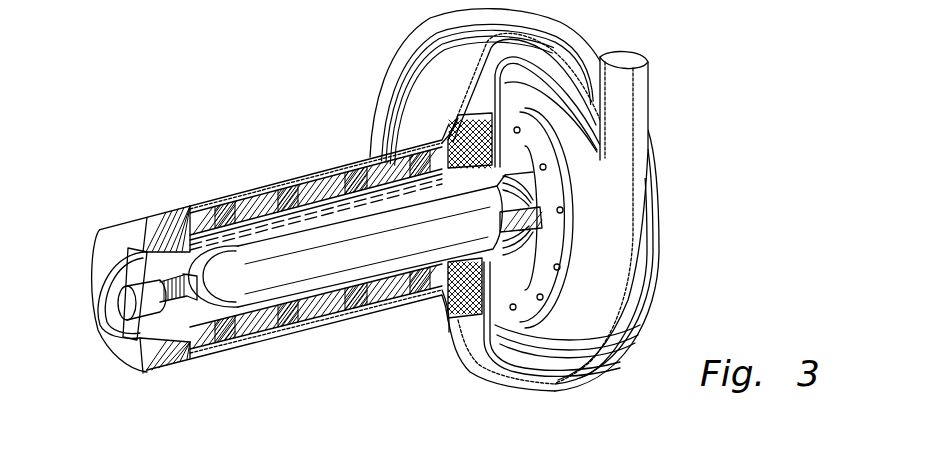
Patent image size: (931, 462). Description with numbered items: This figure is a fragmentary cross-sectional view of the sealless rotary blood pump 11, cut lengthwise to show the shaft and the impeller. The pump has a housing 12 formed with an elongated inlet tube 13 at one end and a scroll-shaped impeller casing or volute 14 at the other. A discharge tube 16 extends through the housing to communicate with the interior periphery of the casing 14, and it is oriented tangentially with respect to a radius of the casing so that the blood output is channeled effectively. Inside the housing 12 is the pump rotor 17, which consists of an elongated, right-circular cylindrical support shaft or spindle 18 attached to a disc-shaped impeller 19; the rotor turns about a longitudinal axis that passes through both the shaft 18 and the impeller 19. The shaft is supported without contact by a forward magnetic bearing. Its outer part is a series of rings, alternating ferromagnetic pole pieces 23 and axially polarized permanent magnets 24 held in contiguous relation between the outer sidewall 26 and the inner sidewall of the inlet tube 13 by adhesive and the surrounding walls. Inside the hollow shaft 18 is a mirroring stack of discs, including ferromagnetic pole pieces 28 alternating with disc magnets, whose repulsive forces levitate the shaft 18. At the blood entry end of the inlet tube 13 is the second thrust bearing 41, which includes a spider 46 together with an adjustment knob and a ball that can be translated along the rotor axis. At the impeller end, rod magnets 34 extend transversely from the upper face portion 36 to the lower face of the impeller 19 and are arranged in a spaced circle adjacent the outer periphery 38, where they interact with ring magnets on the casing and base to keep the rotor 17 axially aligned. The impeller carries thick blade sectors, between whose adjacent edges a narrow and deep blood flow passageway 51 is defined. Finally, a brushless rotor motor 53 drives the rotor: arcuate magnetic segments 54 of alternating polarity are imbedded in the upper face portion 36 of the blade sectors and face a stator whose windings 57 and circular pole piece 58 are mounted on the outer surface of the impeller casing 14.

The sealless rotary blood pump 11 is at (308, 98).
The housing 12 is at (530, 14).
The inlet tube 13 is at (245, 176).
The impeller casing 14 is at (543, 375).
The discharge tube 16 is at (641, 57).
The pump rotor 17 is at (200, 333).
The support shaft 18 is at (250, 305).
The impeller 19 is at (522, 68).
The ferromagnetic pole pieces 23 is at (291, 186).
The axially polarized permanent magnets 24 is at (308, 190).
The outer sidewall 26 is at (222, 198).
The ferromagnetic pole pieces 28 is at (362, 396).
The rod magnets 34 is at (517, 310).
The upper face portion 36 is at (577, 240).
The outer periphery 38 is at (583, 218).
The second thrust bearing 41 is at (112, 320).
The spider 46 is at (123, 277).
The impeller blood flow passageway 51 is at (580, 255).
The brushless rotor motor 53 is at (470, 335).
The arcuate magnetic segments 54 is at (530, 160).
The windings 57 is at (457, 122).
The circular pole piece 58 is at (452, 142).